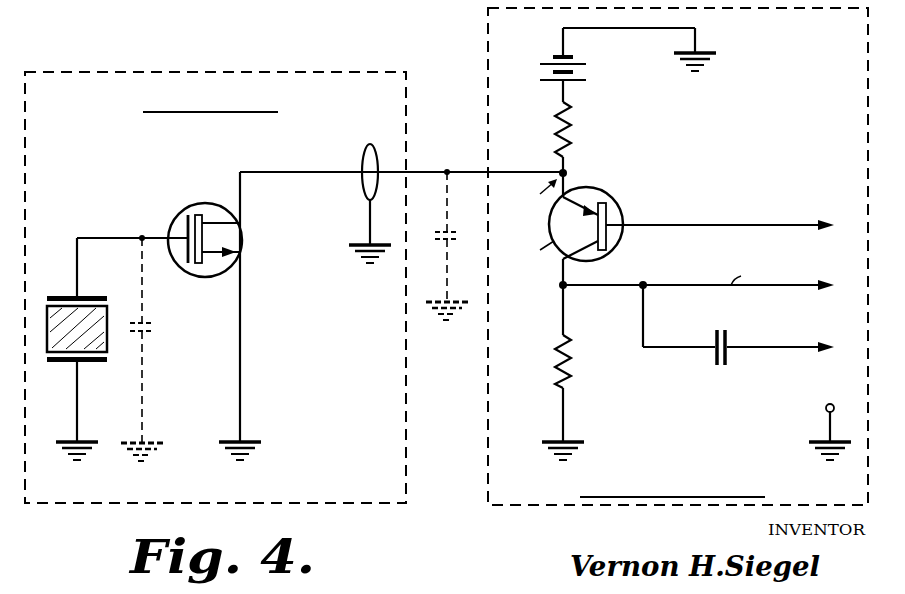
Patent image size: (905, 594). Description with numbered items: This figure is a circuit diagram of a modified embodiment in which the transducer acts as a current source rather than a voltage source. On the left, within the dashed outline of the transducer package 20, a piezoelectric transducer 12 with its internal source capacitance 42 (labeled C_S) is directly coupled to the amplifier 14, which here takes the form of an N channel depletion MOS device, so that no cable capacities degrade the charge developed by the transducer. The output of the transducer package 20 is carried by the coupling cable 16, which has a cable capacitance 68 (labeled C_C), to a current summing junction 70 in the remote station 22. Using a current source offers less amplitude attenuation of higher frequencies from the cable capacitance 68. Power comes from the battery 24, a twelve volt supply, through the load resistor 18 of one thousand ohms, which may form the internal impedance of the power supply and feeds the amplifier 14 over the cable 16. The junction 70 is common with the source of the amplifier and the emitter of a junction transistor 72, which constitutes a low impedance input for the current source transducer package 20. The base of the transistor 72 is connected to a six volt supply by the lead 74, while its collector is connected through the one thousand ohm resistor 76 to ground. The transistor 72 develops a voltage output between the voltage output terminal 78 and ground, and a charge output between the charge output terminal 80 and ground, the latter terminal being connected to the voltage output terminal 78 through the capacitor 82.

The piezoelectric transducer 12 is at (61, 296).
The amplifier 14 is at (190, 203).
The coupling cable 16 is at (432, 172).
The load resistor 18 is at (556, 121).
The transducer package 20 is at (173, 72).
The remote station 22 is at (488, 28).
The battery 24 is at (553, 57).
The source capacitance 42 is at (156, 325).
The cable capacitance 68 is at (456, 232).
The current summing junction 70 is at (567, 173).
The junction transistor 72 is at (621, 209).
The lead 74 is at (702, 224).
The resistor 76 is at (555, 369).
The voltage output terminal 78 is at (688, 285).
The charge output terminal 80 is at (778, 349).
The capacitor 82 is at (715, 366).